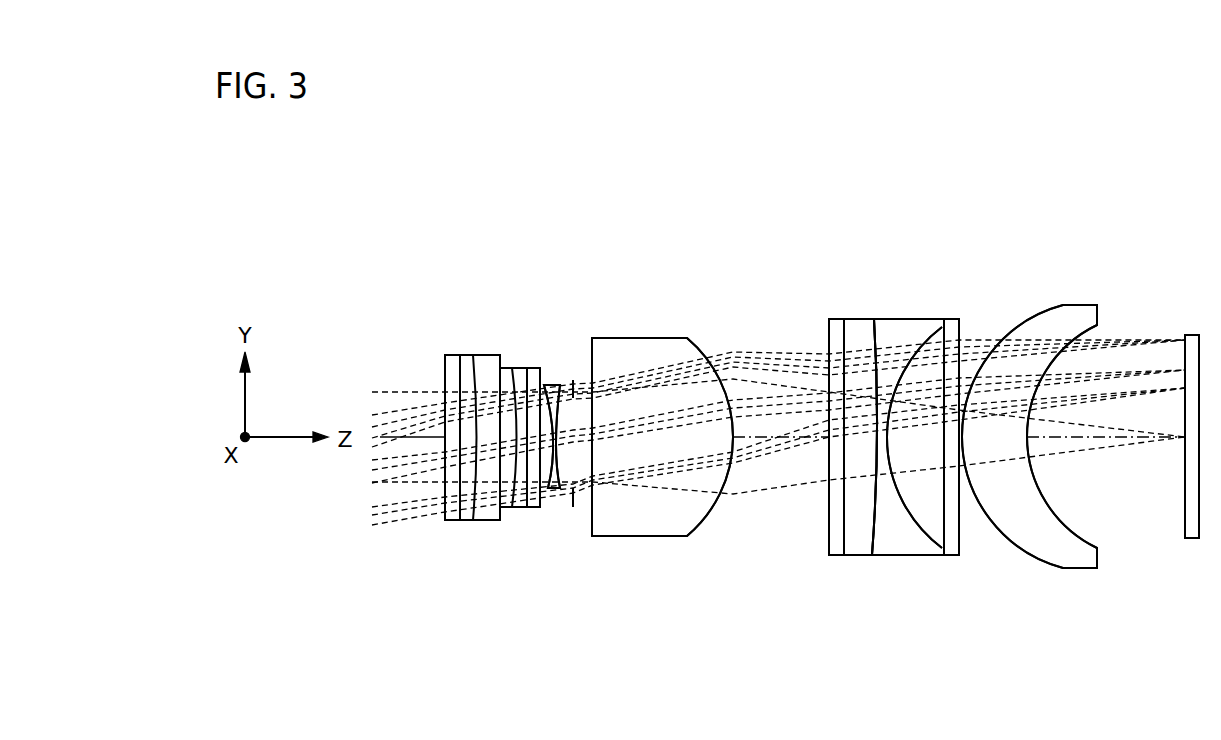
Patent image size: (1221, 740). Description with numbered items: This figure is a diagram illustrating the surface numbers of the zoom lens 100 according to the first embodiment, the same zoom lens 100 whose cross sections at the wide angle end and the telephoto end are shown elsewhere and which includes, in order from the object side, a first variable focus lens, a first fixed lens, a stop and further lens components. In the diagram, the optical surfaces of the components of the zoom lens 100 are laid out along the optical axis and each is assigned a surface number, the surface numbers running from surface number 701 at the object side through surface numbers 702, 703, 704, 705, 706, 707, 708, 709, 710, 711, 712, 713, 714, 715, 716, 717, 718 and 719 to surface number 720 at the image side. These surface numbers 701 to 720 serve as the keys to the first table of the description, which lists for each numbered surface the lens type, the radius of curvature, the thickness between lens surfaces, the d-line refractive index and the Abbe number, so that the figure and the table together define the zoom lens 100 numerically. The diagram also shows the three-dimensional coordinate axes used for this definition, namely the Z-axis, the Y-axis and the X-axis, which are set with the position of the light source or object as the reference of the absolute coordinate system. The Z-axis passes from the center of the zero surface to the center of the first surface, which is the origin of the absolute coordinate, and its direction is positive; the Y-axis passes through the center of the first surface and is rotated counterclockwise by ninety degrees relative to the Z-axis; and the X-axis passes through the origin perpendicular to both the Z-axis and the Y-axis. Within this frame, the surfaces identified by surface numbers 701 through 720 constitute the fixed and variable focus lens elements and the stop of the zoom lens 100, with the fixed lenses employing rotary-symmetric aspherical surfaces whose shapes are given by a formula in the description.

The zoom lens 100 is at (963, 205).
The surface number 701 is at (443, 355).
The surface number 702 is at (452, 520).
The surface number 703 is at (460, 354).
The surface number 704 is at (500, 367).
The surface number 705 is at (525, 507).
The surface number 706 is at (546, 383).
The surface number 707 is at (557, 490).
The surface number 708 is at (578, 385).
The surface number 709 is at (577, 508).
The surface number 710 is at (593, 417).
The surface number 711 is at (703, 527).
The surface number 712 is at (828, 333).
The surface number 713 is at (843, 520).
The surface number 714 is at (875, 340).
The surface number 715 is at (903, 517).
The surface number 716 is at (942, 340).
The surface number 717 is at (960, 533).
The surface number 718 is at (1030, 310).
The surface number 719 is at (1065, 528).
The surface number 720 is at (1183, 420).